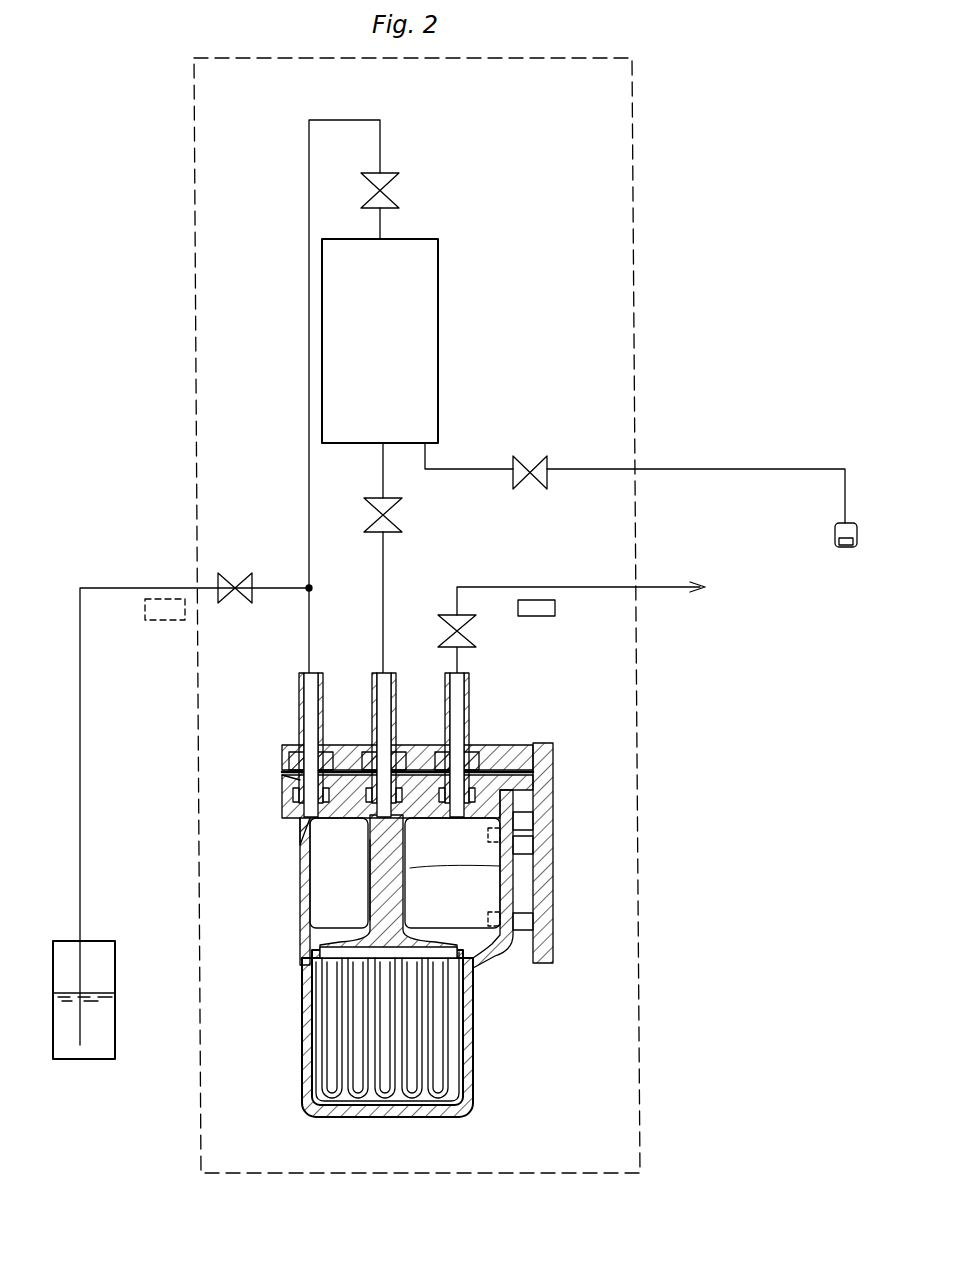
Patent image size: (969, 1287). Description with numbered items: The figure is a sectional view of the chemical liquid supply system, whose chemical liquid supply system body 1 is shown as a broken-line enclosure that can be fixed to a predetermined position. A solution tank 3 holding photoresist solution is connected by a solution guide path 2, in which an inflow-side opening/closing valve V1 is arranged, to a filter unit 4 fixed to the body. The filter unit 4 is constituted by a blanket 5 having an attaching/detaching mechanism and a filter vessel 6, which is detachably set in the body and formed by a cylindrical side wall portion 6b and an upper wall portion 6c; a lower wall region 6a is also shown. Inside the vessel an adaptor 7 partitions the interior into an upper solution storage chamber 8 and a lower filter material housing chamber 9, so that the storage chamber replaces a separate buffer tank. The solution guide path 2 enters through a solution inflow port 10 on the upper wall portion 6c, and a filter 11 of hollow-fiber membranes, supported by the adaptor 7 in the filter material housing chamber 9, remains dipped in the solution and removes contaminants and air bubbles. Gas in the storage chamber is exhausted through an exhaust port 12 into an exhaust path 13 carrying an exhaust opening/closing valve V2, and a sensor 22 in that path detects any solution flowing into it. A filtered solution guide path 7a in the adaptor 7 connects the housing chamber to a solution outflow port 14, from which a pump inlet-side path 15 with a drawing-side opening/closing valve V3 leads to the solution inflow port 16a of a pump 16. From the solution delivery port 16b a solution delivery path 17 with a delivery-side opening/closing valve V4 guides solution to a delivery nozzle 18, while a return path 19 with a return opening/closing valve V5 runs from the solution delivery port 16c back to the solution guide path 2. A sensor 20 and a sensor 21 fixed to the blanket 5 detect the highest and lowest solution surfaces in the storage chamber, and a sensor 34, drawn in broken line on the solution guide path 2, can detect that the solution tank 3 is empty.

The chemical liquid supply system body 1 is at (641, 160).
The solution guide path 2 is at (118, 592).
The solution tank 3 is at (78, 1060).
The filter unit 4 is at (264, 742).
The blanket 5 is at (543, 950).
The filter vessel 6 is at (304, 1127).
The vessel bottom 6a is at (392, 1118).
The side wall portion 6b is at (300, 1045).
The upper wall portion 6c is at (418, 745).
The adaptor 7 is at (403, 872).
The filtered solution guide path 7a is at (388, 905).
The solution storage chamber 8 is at (318, 870).
The filter material housing chamber 9 is at (458, 1020).
The solution inflow port 10 is at (298, 783).
The filter 11 is at (443, 1058).
The exhaust port 12 is at (535, 780).
The exhaust path 13 is at (582, 585).
The solution outflow port 14 is at (300, 818).
The pump inlet-side path 15 is at (386, 578).
The pump 16 is at (438, 318).
The solution inflow port 16a is at (375, 446).
The solution delivery port 16b is at (428, 452).
The solution delivery port 16c is at (383, 238).
The solution delivery path 17 is at (750, 468).
The delivery nozzle 18 is at (845, 550).
The return path 19 is at (309, 155).
The sensor 20 is at (523, 822).
The sensor 21 is at (521, 921).
The sensor 22 is at (550, 615).
The sensor 34 is at (172, 622).
The inflow-side opening/closing valve V1 is at (246, 600).
The exhaust opening/closing valve V2 is at (466, 637).
The drawing-side opening/closing valve V3 is at (392, 522).
The delivery-side opening/closing valve V4 is at (547, 467).
The return opening/closing valve V5 is at (383, 180).